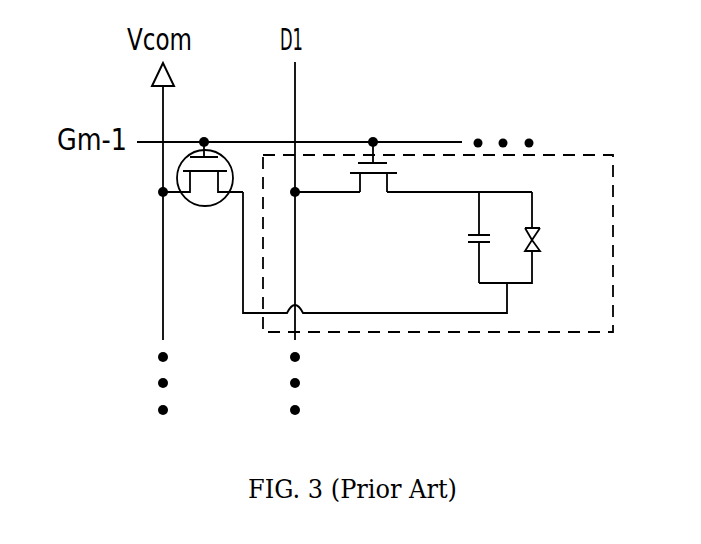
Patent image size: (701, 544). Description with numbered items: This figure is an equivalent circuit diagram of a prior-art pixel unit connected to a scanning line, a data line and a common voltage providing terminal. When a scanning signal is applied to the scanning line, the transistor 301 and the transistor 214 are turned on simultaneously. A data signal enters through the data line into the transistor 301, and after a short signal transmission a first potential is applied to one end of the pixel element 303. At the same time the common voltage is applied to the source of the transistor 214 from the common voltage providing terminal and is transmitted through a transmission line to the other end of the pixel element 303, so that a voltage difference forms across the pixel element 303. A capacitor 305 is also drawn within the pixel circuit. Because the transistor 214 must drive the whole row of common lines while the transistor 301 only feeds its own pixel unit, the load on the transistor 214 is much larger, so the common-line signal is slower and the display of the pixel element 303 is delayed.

The transistor 214 is at (205, 206).
The transistor 301 is at (380, 177).
The pixel element 303 is at (541, 243).
The capacitor 305 is at (470, 246).